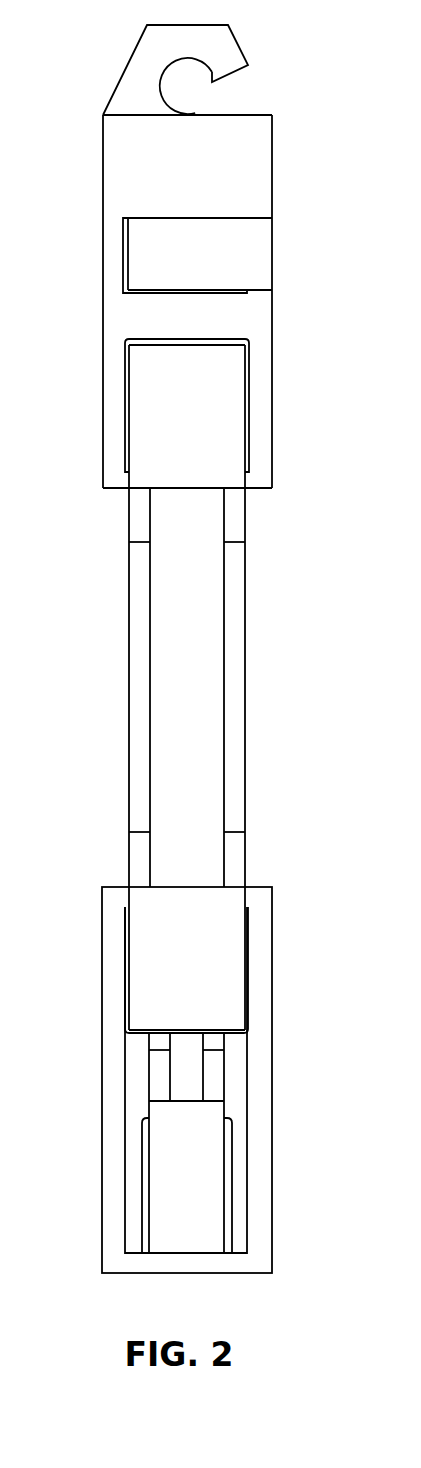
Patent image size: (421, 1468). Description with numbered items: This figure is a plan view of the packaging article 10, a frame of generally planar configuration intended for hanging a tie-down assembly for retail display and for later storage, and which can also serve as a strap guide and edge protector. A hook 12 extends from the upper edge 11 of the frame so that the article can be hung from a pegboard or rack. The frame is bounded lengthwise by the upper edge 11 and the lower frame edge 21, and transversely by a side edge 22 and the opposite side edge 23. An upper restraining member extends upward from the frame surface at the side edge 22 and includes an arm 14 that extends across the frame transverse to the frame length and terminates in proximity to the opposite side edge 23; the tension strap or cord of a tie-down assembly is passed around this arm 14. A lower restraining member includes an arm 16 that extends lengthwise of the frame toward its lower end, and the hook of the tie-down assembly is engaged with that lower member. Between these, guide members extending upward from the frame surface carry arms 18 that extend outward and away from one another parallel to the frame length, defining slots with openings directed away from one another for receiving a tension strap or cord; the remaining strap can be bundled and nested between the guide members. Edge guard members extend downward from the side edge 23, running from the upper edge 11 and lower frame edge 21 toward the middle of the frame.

The packaging article 10 is at (190, 678).
The upper edge 11 is at (258, 113).
The hook 12 is at (245, 51).
The arm 14 is at (147, 262).
The arm 16 is at (163, 1187).
The arms 18 is at (155, 993).
The lower frame edge 21 is at (253, 1275).
The side edge 22 is at (273, 328).
The opposite side edge 23 is at (102, 317).